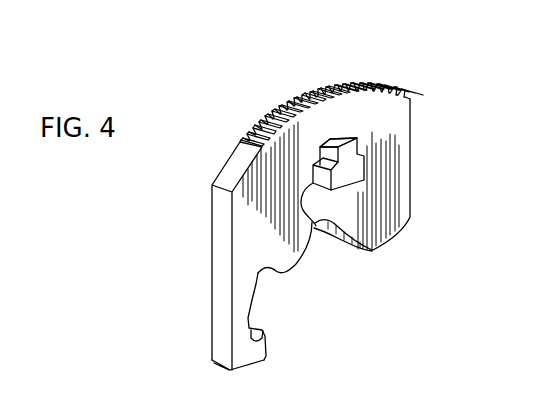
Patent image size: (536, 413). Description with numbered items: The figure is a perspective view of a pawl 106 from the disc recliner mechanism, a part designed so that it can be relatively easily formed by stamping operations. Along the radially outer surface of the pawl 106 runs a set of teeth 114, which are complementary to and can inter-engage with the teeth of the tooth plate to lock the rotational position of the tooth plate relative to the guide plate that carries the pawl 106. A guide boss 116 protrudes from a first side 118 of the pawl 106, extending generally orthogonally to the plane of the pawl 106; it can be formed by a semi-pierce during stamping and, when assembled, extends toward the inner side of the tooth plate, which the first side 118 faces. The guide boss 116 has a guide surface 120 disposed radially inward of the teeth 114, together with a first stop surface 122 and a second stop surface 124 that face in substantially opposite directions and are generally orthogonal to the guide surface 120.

The pawl 106 is at (215, 303).
The teeth 114 is at (300, 93).
The guide boss 116 is at (351, 163).
The first side 118 is at (302, 234).
The guide surface 120 is at (337, 138).
The first stop surface 122 is at (348, 168).
The second stop surface 124 is at (315, 226).